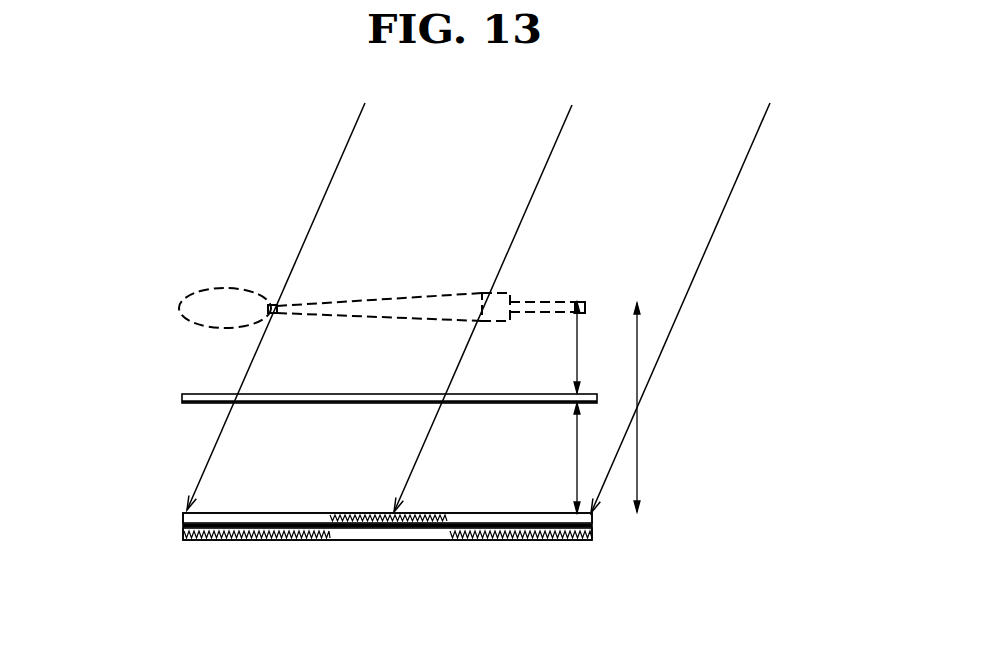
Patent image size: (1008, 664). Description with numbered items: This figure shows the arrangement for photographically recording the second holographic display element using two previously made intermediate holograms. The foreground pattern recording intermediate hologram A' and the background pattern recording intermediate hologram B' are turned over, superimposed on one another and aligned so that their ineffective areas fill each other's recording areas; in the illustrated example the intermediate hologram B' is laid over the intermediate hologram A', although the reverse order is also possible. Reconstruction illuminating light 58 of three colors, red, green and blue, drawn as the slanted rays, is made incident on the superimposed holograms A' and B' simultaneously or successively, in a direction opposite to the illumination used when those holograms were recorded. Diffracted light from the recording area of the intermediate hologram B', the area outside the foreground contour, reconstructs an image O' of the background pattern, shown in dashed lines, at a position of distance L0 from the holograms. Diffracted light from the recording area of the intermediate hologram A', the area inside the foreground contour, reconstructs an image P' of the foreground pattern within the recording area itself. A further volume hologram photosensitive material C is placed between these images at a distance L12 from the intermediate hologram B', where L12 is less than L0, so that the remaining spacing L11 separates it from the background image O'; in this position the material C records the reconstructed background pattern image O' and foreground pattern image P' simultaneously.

The reconstruction illuminating light 58 is at (338, 168).
The image of the background pattern O' is at (382, 264).
The volume hologram photosensitive material C is at (182, 400).
The distance from object image to plate C L11 is at (603, 347).
The distance from intermediate hologram B' to photosensitive material C L12 is at (603, 458).
The distance of the reconstructed background pattern image L0 is at (658, 407).
The image of the foreground pattern P' is at (387, 566).
The background pattern recording intermediate hologram B' is at (430, 531).
The foreground pattern recording intermediate hologram A' is at (430, 557).